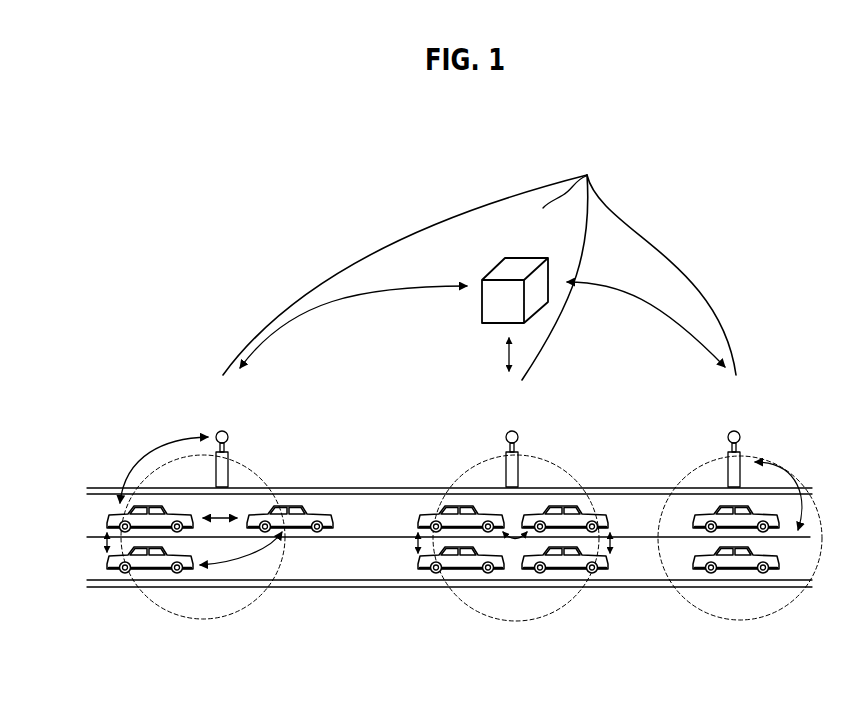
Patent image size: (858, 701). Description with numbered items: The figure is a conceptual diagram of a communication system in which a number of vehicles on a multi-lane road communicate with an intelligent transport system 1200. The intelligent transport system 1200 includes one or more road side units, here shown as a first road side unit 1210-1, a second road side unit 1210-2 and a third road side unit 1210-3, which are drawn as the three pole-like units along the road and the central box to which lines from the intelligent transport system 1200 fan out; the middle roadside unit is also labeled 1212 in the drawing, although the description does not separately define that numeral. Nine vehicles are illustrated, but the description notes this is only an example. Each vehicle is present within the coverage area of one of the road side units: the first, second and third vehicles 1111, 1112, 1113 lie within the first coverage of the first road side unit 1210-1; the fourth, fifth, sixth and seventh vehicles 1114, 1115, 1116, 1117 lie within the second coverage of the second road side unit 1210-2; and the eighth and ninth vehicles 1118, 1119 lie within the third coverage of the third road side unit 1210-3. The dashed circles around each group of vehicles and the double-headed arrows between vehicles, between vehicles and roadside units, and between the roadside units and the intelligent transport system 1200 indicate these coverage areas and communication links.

The intelligent transport system 1200 is at (479, 267).
The first road side unit 1210-1 is at (222, 430).
The second road side unit 1210-2 is at (525, 258).
The third road side unit 1210-3 is at (735, 430).
The roadside unit 1212 is at (510, 430).
The first vehicle 1111 is at (174, 512).
The second vehicle 1112 is at (285, 507).
The third vehicle 1113 is at (152, 569).
The fourth vehicle 1114 is at (453, 505).
The fifth vehicle 1115 is at (553, 505).
The sixth vehicle 1116 is at (464, 570).
The seventh vehicle 1117 is at (568, 570).
The eighth vehicle 1118 is at (702, 517).
The ninth vehicle 1119 is at (738, 572).